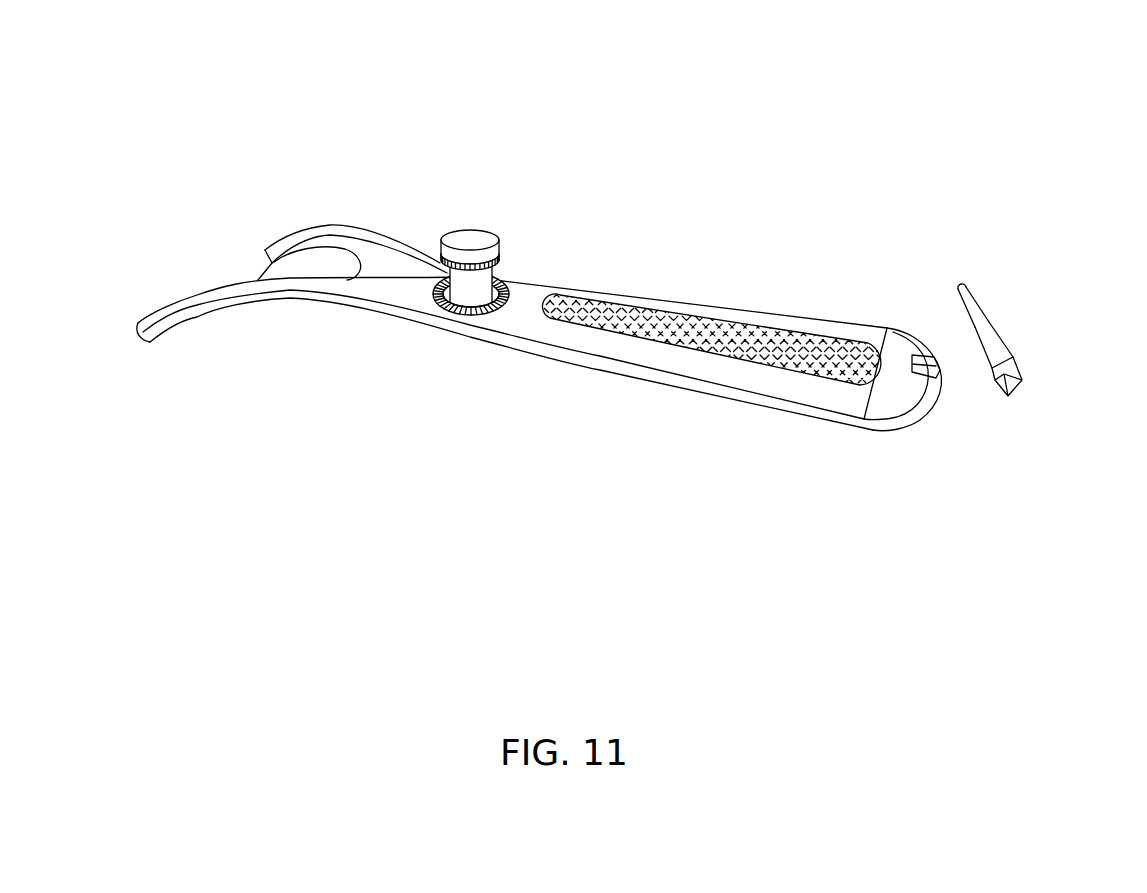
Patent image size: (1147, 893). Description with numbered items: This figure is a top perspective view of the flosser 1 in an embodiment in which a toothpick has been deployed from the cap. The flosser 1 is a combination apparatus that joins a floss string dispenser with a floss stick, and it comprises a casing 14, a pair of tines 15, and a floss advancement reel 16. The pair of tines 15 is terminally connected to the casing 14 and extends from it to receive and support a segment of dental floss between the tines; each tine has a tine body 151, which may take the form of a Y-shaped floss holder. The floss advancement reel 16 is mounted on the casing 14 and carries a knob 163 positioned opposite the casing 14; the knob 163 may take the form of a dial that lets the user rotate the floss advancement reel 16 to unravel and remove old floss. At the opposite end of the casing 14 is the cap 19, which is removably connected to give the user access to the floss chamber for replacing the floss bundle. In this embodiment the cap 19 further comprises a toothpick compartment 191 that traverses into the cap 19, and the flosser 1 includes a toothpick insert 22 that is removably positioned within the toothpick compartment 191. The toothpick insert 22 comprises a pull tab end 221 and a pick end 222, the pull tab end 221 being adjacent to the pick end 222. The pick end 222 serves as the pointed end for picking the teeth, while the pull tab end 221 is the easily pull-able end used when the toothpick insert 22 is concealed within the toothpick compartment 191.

The flosser 1 is at (789, 52).
The casing 14 is at (672, 254).
The pair of tines 15 is at (343, 218).
The tine body 151 is at (310, 229).
The floss advancement reel 16 is at (530, 227).
The knob 163 is at (500, 230).
The cap 19 is at (883, 435).
The toothpick compartment 191 is at (949, 375).
The toothpick insert 22 is at (1007, 331).
The pull tab end 221 is at (1020, 383).
The pick end 222 is at (958, 288).